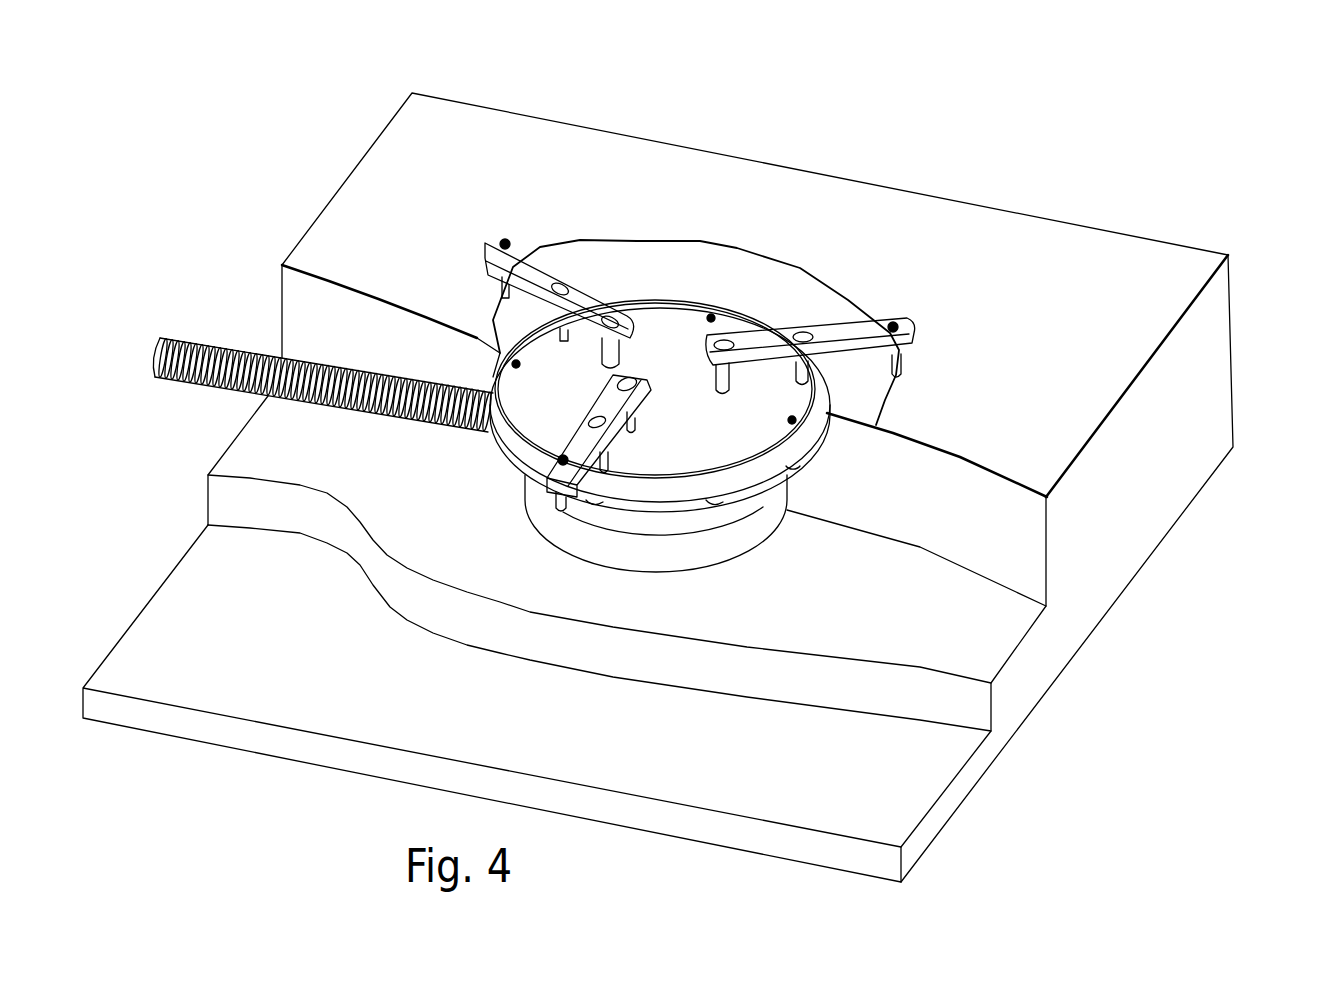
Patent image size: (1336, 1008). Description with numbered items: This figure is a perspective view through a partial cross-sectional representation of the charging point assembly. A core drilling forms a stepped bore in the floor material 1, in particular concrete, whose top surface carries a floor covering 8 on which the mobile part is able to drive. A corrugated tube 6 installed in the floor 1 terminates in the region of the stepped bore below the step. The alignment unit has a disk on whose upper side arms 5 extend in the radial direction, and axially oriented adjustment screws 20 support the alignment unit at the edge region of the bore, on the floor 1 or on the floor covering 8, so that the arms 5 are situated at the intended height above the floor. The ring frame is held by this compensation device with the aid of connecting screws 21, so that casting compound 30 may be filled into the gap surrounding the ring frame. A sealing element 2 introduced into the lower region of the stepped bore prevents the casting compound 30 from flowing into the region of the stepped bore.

The floor material 1 is at (867, 393).
The sealing element 2 is at (730, 547).
The arms 5 is at (830, 330).
The corrugated tube 6 is at (228, 367).
The floor covering 8 is at (483, 175).
The adjustment screws 20 is at (507, 243).
The connecting screws 21 is at (711, 318).
The casting compound 30 is at (793, 470).